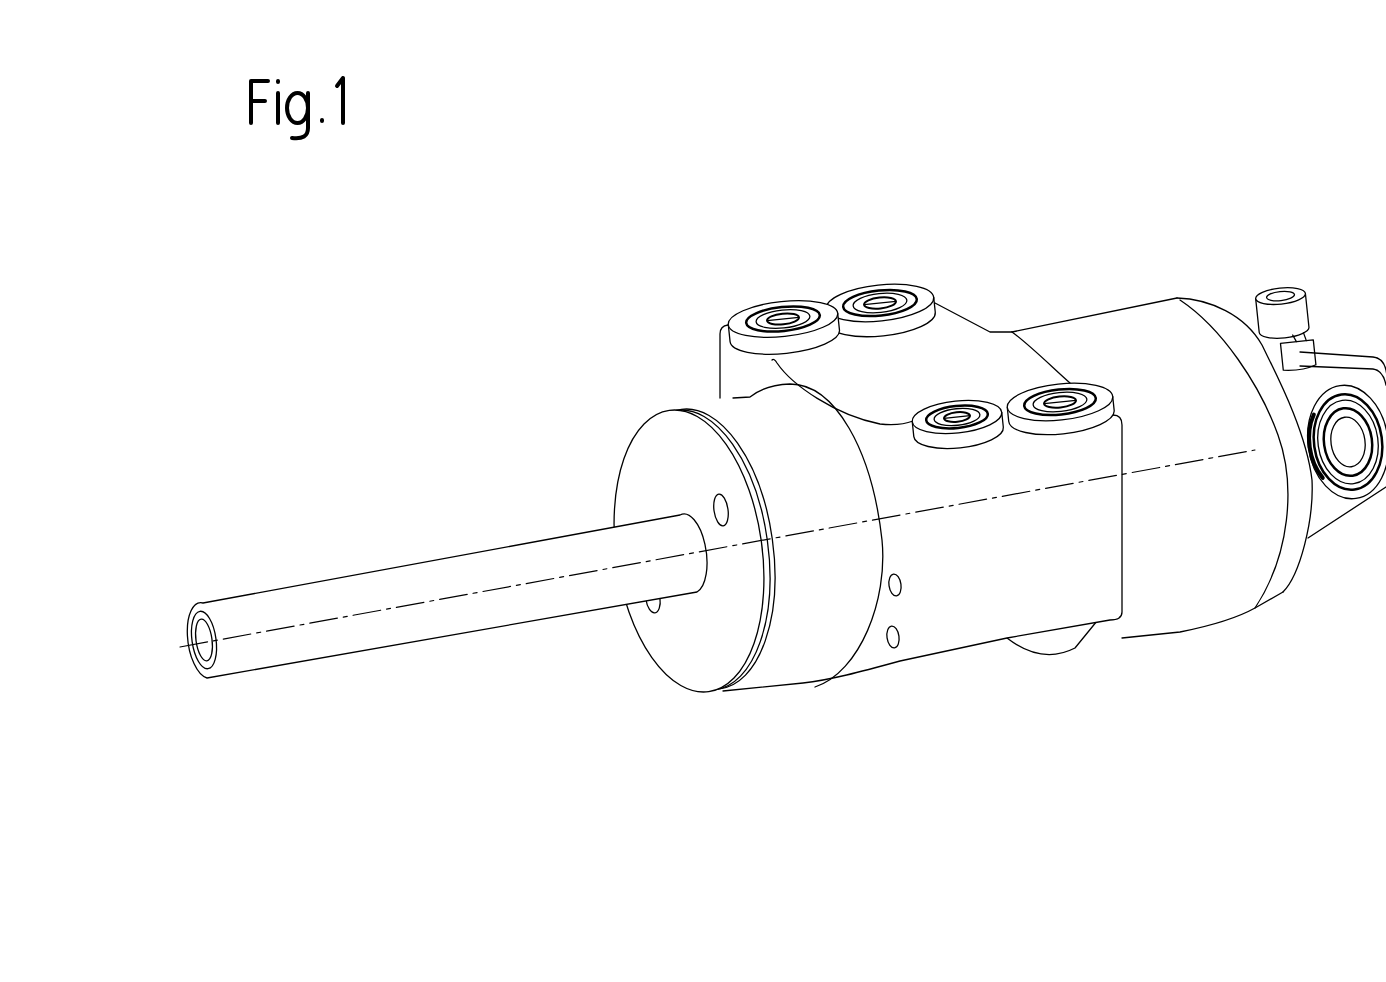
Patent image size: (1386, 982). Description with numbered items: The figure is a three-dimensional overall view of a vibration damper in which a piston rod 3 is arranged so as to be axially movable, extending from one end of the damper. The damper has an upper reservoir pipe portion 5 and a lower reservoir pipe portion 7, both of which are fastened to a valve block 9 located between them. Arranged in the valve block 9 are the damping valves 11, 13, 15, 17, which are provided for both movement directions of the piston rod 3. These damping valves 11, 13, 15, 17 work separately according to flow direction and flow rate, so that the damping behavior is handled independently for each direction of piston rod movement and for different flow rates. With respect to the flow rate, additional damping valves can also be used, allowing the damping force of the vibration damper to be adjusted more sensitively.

The piston rod 3 is at (498, 617).
The upper reservoir pipe portion 5 is at (777, 655).
The lower reservoir pipe portion 7 is at (1185, 598).
The valve block 9 is at (938, 627).
The damping valve 11 is at (962, 427).
The damping valve 13 is at (1057, 410).
The damping valve 15 is at (878, 303).
The damping valve 17 is at (780, 322).